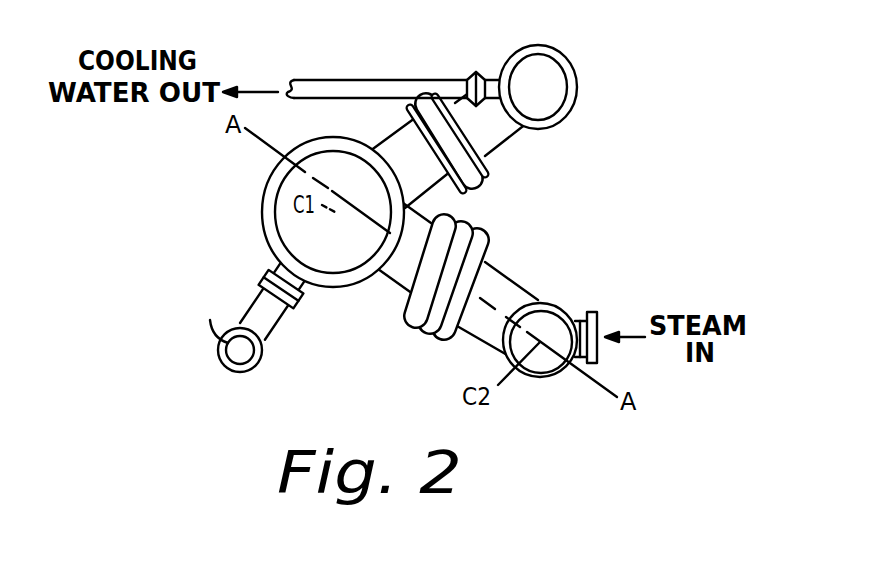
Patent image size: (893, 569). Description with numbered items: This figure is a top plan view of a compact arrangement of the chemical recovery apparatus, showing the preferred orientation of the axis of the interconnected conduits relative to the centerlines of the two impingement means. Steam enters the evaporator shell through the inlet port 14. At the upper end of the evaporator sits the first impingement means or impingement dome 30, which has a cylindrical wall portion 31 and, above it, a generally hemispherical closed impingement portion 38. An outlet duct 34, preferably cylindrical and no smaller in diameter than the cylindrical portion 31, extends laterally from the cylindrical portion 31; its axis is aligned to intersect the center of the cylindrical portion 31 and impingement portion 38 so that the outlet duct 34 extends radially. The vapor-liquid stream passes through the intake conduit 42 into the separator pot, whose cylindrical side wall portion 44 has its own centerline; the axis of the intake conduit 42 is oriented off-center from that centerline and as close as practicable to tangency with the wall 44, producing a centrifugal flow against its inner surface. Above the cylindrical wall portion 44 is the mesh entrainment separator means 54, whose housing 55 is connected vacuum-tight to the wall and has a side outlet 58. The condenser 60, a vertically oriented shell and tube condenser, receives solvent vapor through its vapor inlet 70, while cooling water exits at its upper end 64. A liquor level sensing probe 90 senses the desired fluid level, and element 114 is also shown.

The inlet port 14 is at (578, 303).
The impingement dome 30 is at (526, 386).
The cylindrical wall portion 31 is at (530, 337).
The outlet duct 34 is at (503, 290).
The closed impingement portion 38 is at (548, 360).
The intake conduit 42 is at (400, 292).
The cylindrical side wall portion 44 is at (273, 230).
The mesh entrainment separator means 54 is at (347, 257).
The housing 55 is at (288, 189).
The outlet 58 is at (395, 148).
The condenser 60 is at (552, 103).
The upper end 64 is at (498, 82).
The vapor inlet 70 is at (497, 127).
The liquor level sensing probe 90 is at (236, 351).
The drain coupling 114 is at (263, 363).